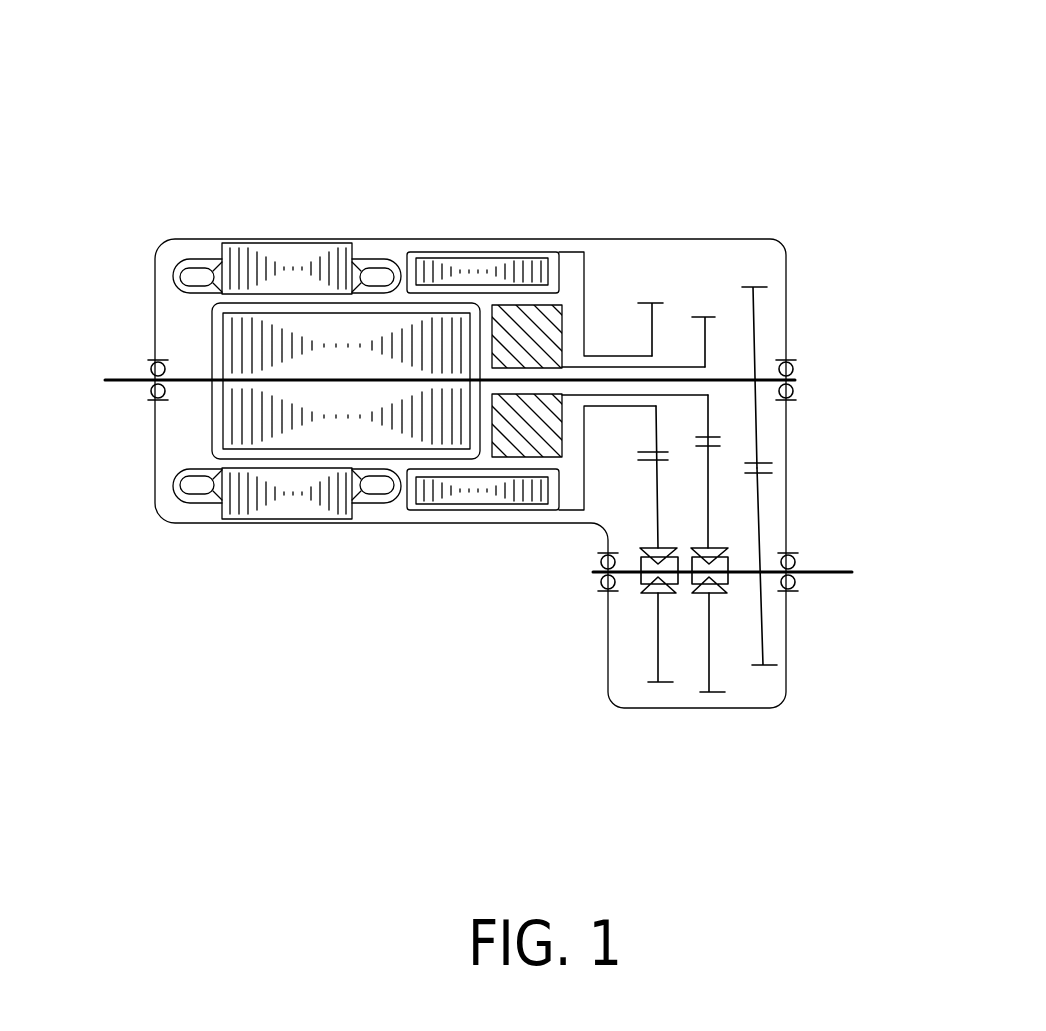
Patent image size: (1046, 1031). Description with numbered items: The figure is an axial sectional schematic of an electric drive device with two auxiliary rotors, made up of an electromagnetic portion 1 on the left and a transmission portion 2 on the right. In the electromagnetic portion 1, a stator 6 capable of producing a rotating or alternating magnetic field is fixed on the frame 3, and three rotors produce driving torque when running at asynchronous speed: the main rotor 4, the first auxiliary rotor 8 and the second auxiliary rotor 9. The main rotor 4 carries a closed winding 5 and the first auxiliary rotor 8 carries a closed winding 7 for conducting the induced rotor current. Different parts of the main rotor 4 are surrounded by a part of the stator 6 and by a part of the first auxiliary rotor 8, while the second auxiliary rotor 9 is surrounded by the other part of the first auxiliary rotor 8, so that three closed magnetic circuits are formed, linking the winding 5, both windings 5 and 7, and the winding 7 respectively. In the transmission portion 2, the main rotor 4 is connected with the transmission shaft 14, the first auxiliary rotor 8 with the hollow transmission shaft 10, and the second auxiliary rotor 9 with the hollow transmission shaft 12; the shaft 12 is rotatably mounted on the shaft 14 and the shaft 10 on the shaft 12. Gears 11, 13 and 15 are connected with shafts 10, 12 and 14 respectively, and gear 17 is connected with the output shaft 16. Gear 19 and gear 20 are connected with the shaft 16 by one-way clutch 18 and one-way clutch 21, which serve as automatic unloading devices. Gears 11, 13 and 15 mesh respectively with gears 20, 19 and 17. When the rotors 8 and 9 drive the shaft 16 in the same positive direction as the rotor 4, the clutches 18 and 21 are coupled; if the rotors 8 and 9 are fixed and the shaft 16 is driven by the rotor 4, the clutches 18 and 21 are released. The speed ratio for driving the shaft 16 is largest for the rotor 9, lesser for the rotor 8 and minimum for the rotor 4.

The electromagnetic portion 1 is at (562, 52).
The transmission portion 2 is at (788, 50).
The frame 3 is at (154, 297).
The main rotor 4 is at (247, 327).
The closed winding 5 is at (287, 305).
The stator 6 is at (307, 253).
The closed winding 7 is at (440, 287).
The first auxiliary rotor 8 is at (465, 270).
The second auxiliary rotor 9 is at (515, 327).
The transmission shaft 10 is at (620, 357).
The gear 11 is at (653, 303).
The transmission shaft 12 is at (686, 367).
The gear 13 is at (706, 317).
The transmission shaft 14 is at (727, 378).
The gear 15 is at (764, 287).
The shaft 16 is at (812, 573).
The gear 17 is at (757, 668).
The one-way clutch 18 is at (720, 597).
The gear 19 is at (708, 694).
The gear 20 is at (658, 683).
The one-way clutch 21 is at (653, 593).